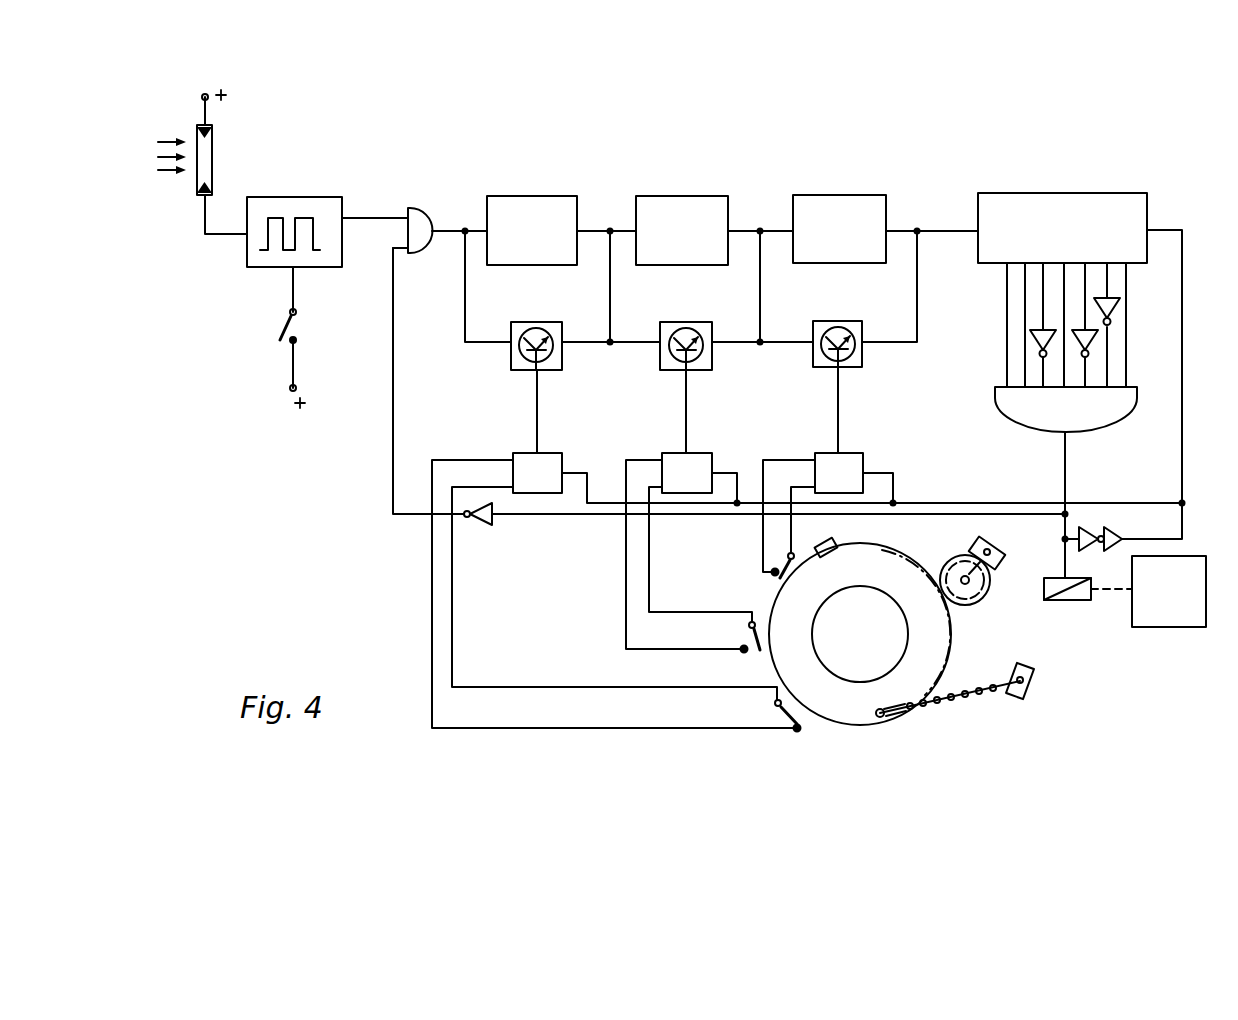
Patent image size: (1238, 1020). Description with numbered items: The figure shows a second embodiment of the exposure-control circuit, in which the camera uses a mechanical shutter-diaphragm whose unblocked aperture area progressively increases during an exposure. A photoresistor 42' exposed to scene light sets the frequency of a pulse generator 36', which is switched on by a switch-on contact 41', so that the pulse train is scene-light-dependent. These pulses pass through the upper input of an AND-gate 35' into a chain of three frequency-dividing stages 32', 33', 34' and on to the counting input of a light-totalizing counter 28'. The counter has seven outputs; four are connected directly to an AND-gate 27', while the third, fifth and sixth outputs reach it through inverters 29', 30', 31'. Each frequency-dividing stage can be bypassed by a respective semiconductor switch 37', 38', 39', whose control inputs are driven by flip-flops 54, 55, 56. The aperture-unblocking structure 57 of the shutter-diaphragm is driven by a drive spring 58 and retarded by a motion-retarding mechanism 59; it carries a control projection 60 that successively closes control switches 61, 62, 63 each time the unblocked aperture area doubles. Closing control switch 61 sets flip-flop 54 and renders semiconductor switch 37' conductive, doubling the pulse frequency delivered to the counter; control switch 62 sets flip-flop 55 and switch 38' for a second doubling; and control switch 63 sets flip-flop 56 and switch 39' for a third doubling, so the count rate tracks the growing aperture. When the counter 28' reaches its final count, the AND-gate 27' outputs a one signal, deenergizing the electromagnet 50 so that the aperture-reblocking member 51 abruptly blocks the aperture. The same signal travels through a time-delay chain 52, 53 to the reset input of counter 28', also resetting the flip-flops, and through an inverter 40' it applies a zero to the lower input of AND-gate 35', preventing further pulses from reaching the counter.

The photoresistor 42' is at (216, 162).
The pulse generator 36' is at (327, 205).
The switch-on contact 41' is at (312, 337).
The AND-gate 35' is at (418, 198).
The frequency-dividing stage 34' is at (532, 204).
The frequency-dividing stage 33' is at (682, 204).
The frequency-dividing stage 32' is at (839, 203).
The light-totalizing counter 28' is at (1059, 265).
The inverter 29' is at (988, 354).
The inverter 30' is at (1033, 354).
The inverter 31' is at (1138, 338).
The AND-gate 27' is at (1056, 437).
The semiconductor switch 39' is at (521, 350).
The semiconductor switch 38' is at (671, 350).
The semiconductor switch 37' is at (822, 349).
The flip-flop 56 is at (527, 458).
The flip-flop 55 is at (677, 458).
The flip-flop 54 is at (830, 458).
The inverter 40' is at (493, 542).
The control switch 61 is at (786, 556).
The control switch 62 is at (750, 640).
The control switch 63 is at (775, 712).
The aperture-unblocking structure 57 is at (955, 652).
The control projection 60 is at (829, 552).
The motion-retarding mechanism 59 is at (978, 581).
The drive spring 58 is at (957, 698).
The time-delay chain element 52 is at (1092, 552).
The time-delay chain element 53 is at (1116, 552).
The electromagnet 50 is at (1079, 600).
The aperture-reblocking member 51 is at (1172, 612).